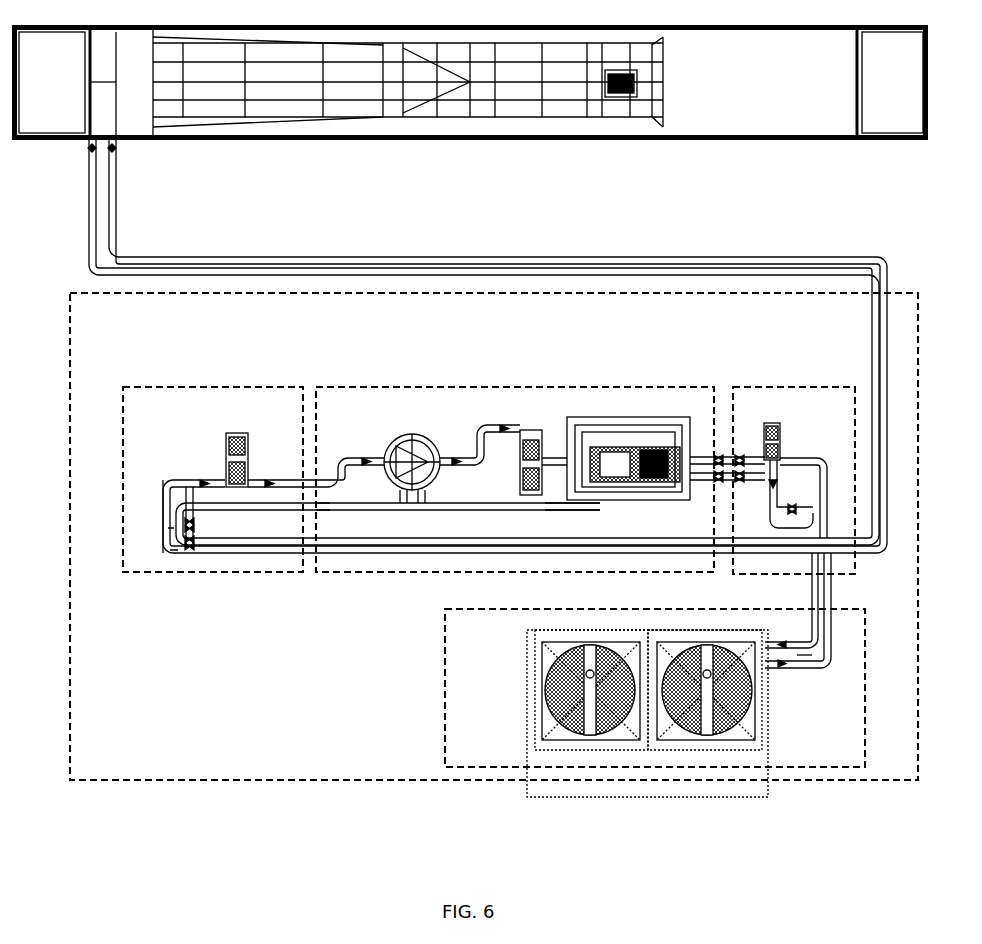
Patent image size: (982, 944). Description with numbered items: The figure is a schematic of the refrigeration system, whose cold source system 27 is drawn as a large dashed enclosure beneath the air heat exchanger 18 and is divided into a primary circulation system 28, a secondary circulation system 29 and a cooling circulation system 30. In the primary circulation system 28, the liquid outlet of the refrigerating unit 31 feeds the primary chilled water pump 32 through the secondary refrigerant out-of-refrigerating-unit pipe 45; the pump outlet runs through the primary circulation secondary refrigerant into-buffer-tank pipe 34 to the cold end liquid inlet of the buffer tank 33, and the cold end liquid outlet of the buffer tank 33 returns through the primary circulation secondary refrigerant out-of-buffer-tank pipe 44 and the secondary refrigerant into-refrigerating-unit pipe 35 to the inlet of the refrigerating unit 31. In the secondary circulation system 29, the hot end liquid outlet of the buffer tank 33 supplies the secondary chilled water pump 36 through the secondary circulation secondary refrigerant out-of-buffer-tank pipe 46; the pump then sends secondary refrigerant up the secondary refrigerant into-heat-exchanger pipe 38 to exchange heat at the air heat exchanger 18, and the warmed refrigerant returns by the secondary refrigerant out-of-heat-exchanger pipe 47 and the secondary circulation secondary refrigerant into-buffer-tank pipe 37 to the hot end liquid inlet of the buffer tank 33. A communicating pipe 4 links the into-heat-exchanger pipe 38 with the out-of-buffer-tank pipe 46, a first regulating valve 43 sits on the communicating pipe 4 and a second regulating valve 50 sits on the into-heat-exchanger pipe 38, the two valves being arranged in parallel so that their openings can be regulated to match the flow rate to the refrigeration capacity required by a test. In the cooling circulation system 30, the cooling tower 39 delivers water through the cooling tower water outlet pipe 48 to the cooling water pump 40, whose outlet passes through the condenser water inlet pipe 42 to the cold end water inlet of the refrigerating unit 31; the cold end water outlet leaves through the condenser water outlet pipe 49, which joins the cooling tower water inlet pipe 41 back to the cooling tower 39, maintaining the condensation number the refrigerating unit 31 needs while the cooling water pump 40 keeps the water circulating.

The air heat exchanger 18 is at (100, 32).
The cold source system 27 is at (82, 293).
The secondary refrigerant into-heat-exchanger pipe 38 is at (350, 257).
The secondary refrigerant out-of-heat-exchanger pipe 47 is at (853, 268).
The first regulating valve 43 is at (185, 485).
The second regulating valve 50 is at (185, 555).
The communicating pipe 4 is at (200, 565).
The secondary chilled water pump 36 is at (230, 455).
The secondary circulation secondary refrigerant out-of-buffer-tank pipe 46 is at (285, 490).
The secondary circulation system 29 is at (303, 387).
The primary circulation system 28 is at (360, 387).
The buffer tank 33 is at (413, 434).
The primary circulation secondary refrigerant into-buffer-tank pipe 34 is at (468, 458).
The primary chilled water pump 32 is at (525, 432).
The secondary refrigerant out-of-refrigerating-unit pipe 45 is at (572, 500).
The refrigerating unit 31 is at (655, 417).
The secondary refrigerant into-refrigerating-unit pipe 35 is at (573, 540).
The condenser water inlet pipe 42 is at (722, 468).
The condenser water outlet pipe 49 is at (727, 478).
The cooling circulation system 30 is at (838, 387).
The cooling water pump 40 is at (770, 425).
The primary circulation secondary refrigerant out-of-buffer-tank pipe 44 is at (450, 562).
The secondary circulation secondary refrigerant into-buffer-tank pipe 37 is at (322, 565).
The cooling tower 39 is at (530, 705).
The cooling tower water outlet pipe 48 is at (803, 660).
The cooling tower water inlet pipe 41 is at (780, 648).